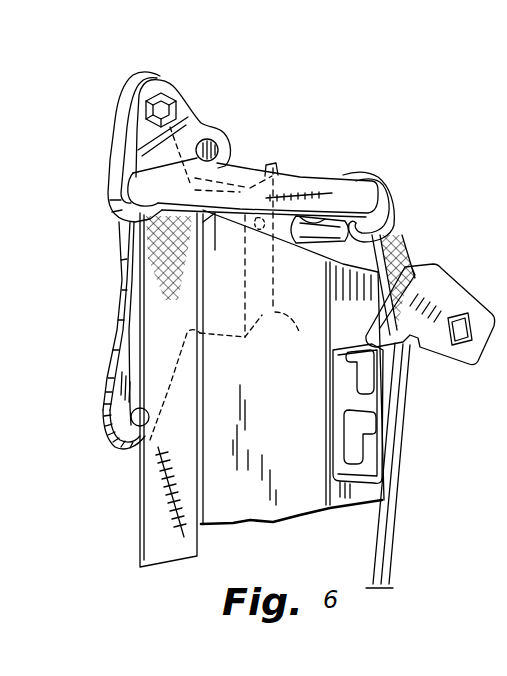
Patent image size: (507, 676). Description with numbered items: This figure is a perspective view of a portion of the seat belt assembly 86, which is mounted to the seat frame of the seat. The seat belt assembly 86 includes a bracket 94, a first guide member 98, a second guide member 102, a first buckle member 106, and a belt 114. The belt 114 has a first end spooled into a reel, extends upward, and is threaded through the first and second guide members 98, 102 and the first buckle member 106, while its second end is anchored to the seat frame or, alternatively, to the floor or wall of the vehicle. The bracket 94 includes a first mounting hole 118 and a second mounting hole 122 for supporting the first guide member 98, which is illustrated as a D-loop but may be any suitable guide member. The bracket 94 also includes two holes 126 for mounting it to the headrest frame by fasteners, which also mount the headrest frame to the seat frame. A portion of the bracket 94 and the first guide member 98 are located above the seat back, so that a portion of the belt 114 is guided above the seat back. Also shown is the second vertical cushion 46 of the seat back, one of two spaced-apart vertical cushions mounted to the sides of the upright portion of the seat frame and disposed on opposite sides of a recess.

The seat belt assembly 86 is at (413, 80).
The bracket 94 is at (122, 316).
The first guide member 98 is at (197, 118).
The first mounting hole 118 is at (150, 68).
The second mounting hole 122 is at (118, 436).
The belt 114 is at (150, 512).
The second vertical cushion 46 is at (318, 419).
The holes 126 is at (296, 185).
The second guide member 102 is at (383, 176).
The first buckle member 106 is at (483, 285).